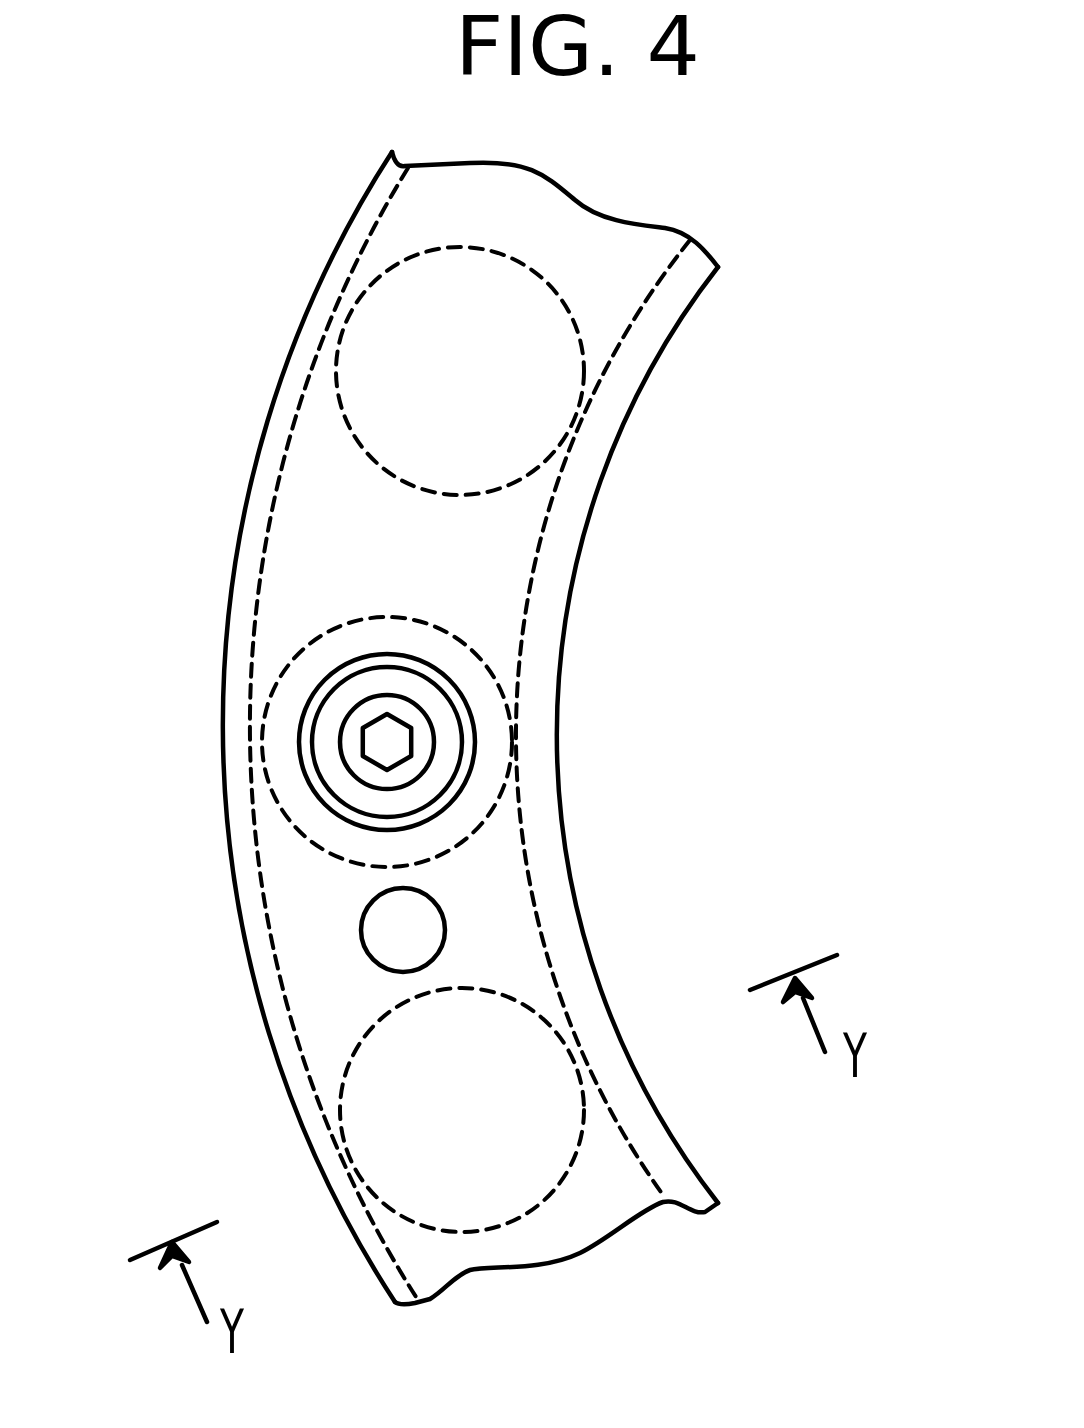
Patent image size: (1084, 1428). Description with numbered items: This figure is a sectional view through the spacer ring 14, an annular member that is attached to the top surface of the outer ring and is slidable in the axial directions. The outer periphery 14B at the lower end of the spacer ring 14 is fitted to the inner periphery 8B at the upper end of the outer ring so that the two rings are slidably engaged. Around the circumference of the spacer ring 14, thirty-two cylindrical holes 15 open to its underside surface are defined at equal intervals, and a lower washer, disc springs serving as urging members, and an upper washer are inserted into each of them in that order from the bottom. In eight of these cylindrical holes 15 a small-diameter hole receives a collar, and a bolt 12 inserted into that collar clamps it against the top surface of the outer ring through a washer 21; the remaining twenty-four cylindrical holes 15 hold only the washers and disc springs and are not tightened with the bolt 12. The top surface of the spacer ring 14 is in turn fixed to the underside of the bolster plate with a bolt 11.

The spacer ring 14 is at (577, 593).
The outer periphery 14B is at (618, 348).
The inner periphery 8B is at (564, 734).
The cylindrical holes 15 is at (340, 413).
The washer 21 is at (437, 772).
The bolt 12 is at (423, 735).
The bolt 11 is at (417, 918).